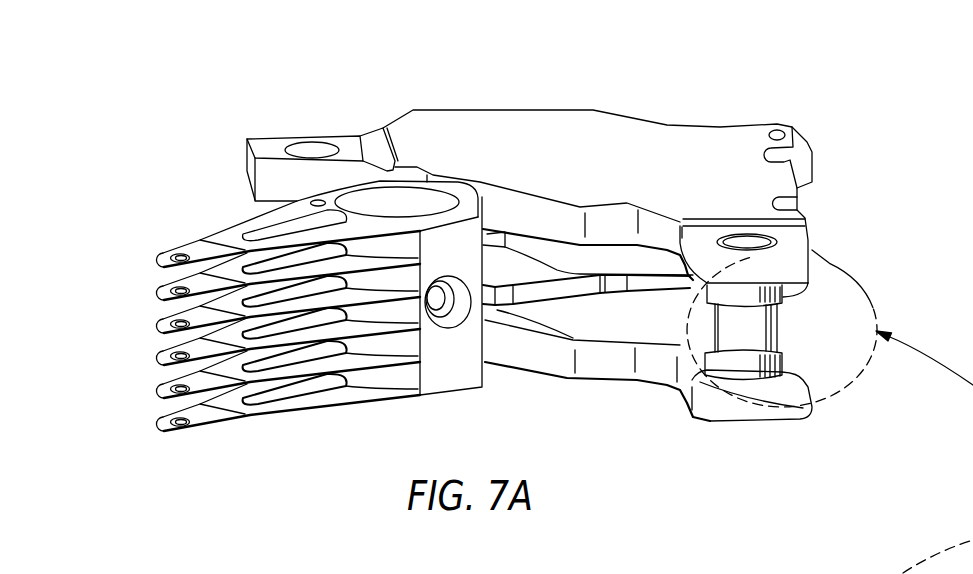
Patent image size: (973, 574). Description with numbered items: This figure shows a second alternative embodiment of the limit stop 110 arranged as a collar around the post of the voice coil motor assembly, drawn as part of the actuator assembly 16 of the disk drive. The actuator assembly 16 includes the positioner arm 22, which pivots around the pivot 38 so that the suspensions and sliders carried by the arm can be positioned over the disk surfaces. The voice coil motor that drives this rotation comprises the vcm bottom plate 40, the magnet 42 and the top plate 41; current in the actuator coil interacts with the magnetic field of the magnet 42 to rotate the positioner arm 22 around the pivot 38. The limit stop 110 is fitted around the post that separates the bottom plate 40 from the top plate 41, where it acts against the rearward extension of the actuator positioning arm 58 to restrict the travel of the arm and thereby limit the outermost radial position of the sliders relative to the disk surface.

The actuator assembly 16 is at (254, 212).
The positioner arm 22 is at (270, 421).
The pivot 38 is at (408, 197).
The top plate 41 is at (800, 171).
The rearward extension of the actuator positioning arm 58 is at (641, 282).
The magnet 42 is at (790, 315).
The vcm bottom plate 40 is at (815, 393).
The limit stop 110 is at (740, 337).